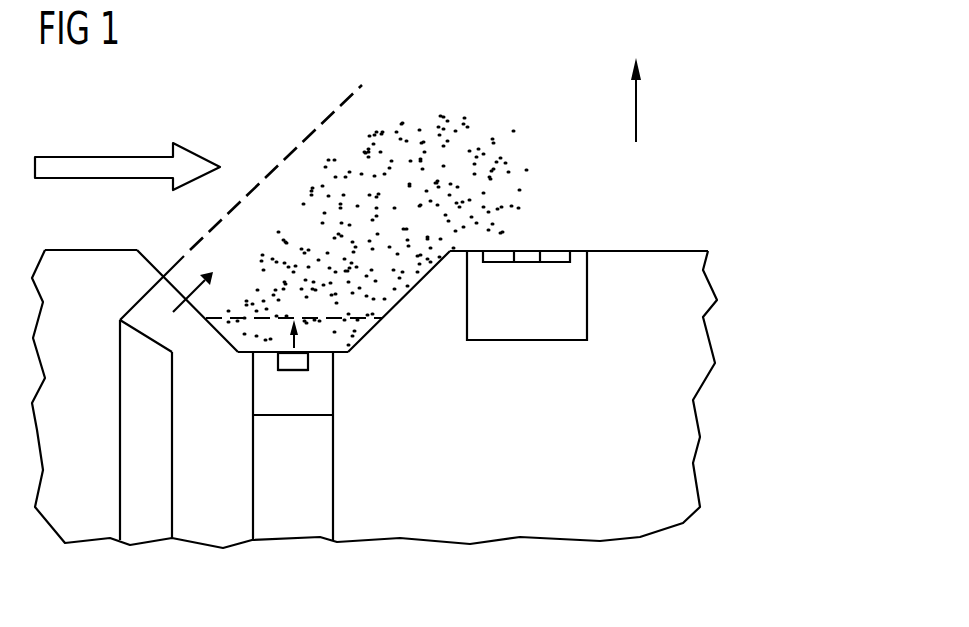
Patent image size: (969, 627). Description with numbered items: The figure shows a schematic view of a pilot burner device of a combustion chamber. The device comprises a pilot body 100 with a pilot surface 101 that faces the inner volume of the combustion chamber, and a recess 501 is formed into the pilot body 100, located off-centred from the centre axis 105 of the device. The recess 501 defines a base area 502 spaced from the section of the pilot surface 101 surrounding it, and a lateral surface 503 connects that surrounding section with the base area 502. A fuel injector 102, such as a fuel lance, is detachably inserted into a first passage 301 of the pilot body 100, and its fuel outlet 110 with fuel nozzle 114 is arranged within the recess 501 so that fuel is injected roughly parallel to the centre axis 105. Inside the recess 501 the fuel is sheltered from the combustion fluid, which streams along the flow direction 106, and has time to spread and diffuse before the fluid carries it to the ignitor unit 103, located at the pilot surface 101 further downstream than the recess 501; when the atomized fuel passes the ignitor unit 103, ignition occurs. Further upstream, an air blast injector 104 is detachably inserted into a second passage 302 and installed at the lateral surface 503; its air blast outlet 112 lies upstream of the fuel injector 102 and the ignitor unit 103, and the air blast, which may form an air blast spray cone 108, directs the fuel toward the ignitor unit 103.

The pilot body 100 is at (730, 320).
The pilot surface 101 is at (668, 251).
The fuel injector 102 is at (322, 382).
The ignitor unit 103 is at (575, 297).
The air blast injector 104 is at (143, 303).
The centre axis 105 is at (632, 110).
The flow direction 106 is at (92, 167).
The air blast spray cone 108 is at (313, 123).
The fuel outlet 110 is at (273, 355).
The air blast outlet 112 is at (190, 313).
The fuel nozzle 114 is at (297, 372).
The first passage 301 is at (285, 530).
The second passage 302 is at (143, 530).
The recess 501 is at (290, 273).
The base area 502 is at (313, 347).
The lateral surface 503 is at (410, 287).